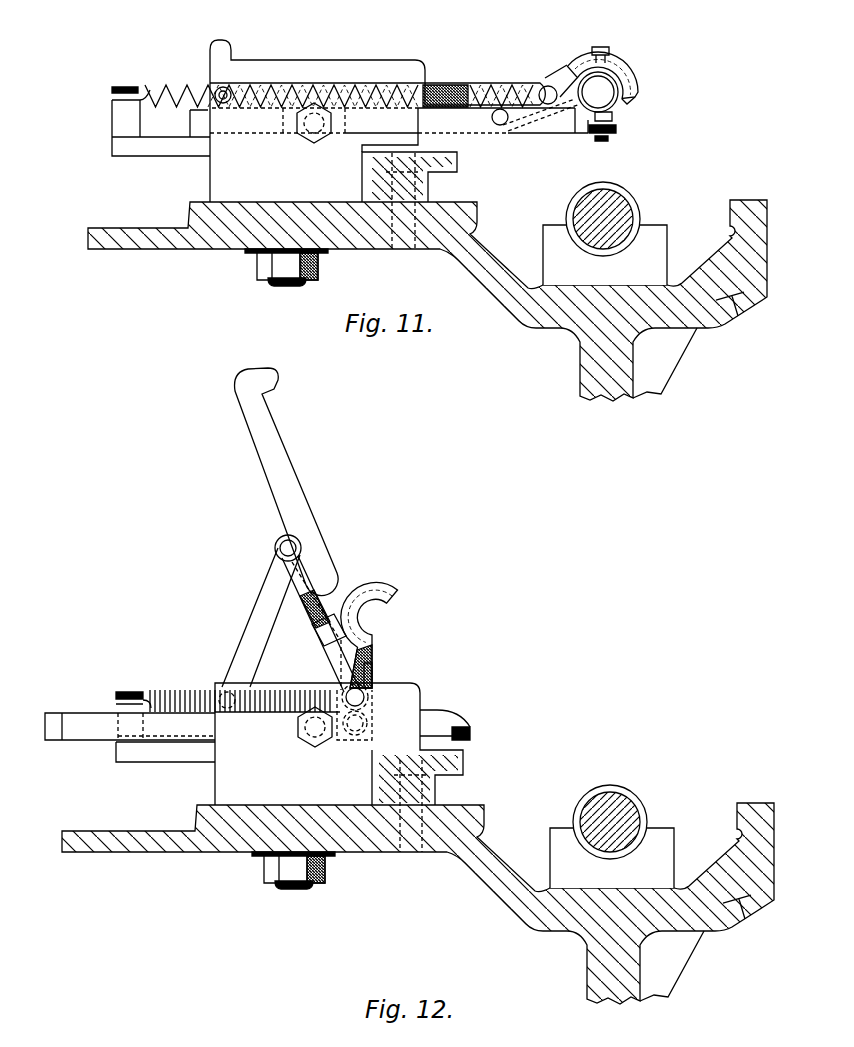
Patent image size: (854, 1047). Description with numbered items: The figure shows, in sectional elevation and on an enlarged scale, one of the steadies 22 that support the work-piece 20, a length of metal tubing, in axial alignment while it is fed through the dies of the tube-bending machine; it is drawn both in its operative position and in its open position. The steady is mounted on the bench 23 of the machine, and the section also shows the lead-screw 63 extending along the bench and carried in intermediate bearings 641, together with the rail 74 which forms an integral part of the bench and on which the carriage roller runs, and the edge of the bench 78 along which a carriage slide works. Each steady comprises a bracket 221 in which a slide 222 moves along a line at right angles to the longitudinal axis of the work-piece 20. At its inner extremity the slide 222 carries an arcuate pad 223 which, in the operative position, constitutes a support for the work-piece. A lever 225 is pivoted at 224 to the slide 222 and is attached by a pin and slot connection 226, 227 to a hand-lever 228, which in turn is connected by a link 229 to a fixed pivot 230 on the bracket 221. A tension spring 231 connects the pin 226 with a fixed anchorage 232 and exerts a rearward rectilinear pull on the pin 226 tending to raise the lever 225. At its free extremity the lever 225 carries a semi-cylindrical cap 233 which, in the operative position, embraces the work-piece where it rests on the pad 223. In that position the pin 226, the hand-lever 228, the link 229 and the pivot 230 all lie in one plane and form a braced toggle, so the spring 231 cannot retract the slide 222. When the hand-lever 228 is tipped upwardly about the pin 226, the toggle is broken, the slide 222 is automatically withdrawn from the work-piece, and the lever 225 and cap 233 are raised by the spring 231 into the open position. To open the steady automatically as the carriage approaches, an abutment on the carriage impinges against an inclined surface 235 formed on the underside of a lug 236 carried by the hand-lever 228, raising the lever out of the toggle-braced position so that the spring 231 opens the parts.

In FIG. 11, the work-piece 20 is at (619, 99).
In FIG. 11, the steady 22 is at (640, 92).
In FIG. 11, the bench 23 is at (494, 251).
In FIG. 12, the bench 23 is at (720, 857).
In FIG. 11, the lead-screw 63 is at (636, 208).
In FIG. 12, the lead-screw 63 is at (590, 798).
In FIG. 11, the rail 74 is at (732, 202).
In FIG. 11, the edge of the bench 78 is at (461, 203).
In FIG. 11, the bracket 221 is at (210, 182).
In FIG. 12, the bracket 221 is at (216, 783).
In FIG. 11, the slide 222 is at (190, 125).
In FIG. 12, the slide 222 is at (104, 736).
In FIG. 11, the arcuate pad 223 is at (616, 119).
In FIG. 12, the arcuate pad 223 is at (457, 721).
In FIG. 11, the pivot 224 is at (497, 124).
In FIG. 12, the pivot 224 is at (366, 722).
In FIG. 11, the lever 225 is at (572, 64).
In FIG. 12, the lever 225 is at (373, 682).
In FIG. 11, the pin 226 is at (546, 86).
In FIG. 12, the pin 226 is at (369, 698).
In FIG. 11, the slot 227 is at (506, 133).
In FIG. 12, the slot 227 is at (373, 672).
In FIG. 11, the hand-lever 228 is at (240, 58).
In FIG. 12, the hand-lever 228 is at (274, 432).
In FIG. 12, the link 229 is at (256, 606).
In FIG. 11, the fixed pivot 230 is at (216, 88).
In FIG. 12, the fixed pivot 230 is at (222, 690).
In FIG. 11, the tension spring 231 is at (176, 92).
In FIG. 12, the tension spring 231 is at (174, 690).
In FIG. 11, the fixed anchorage 232 is at (112, 117).
In FIG. 12, the fixed anchorage 232 is at (116, 706).
In FIG. 11, the semi-cylindrical cap 233 is at (633, 71).
In FIG. 12, the semi-cylindrical cap 233 is at (388, 592).
In FIG. 11, the inclined surface 235 is at (463, 106).
In FIG. 12, the inclined surface 235 is at (312, 618).
In FIG. 11, the lug 236 is at (447, 87).
In FIG. 12, the lug 236 is at (322, 641).
In FIG. 11, the intermediate bearings 641 is at (665, 229).
In FIG. 12, the intermediate bearings 641 is at (556, 831).